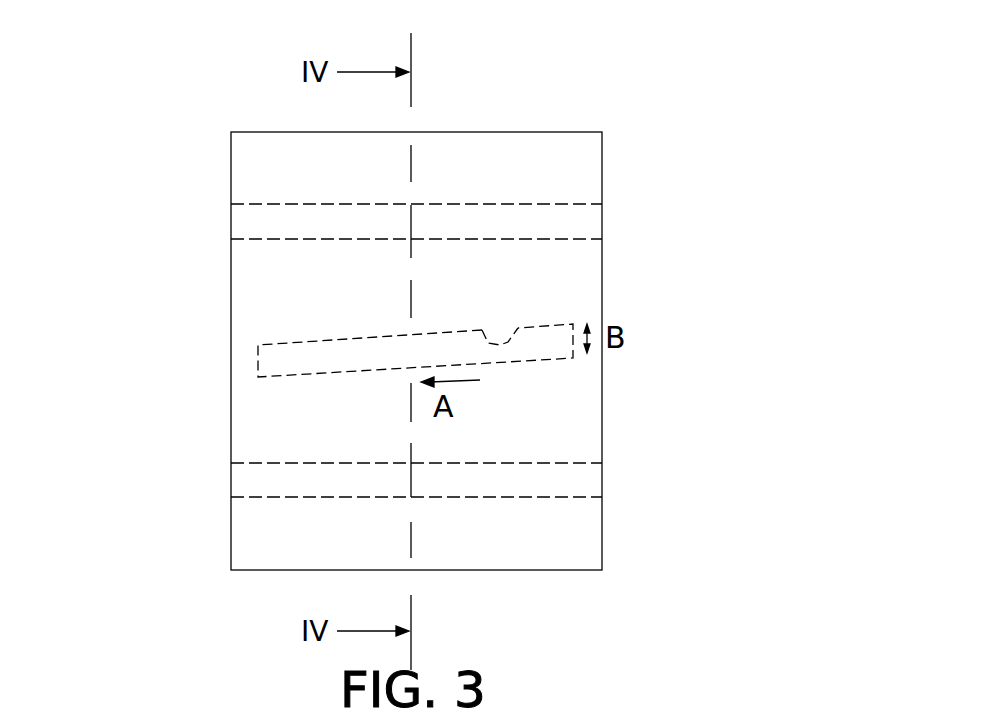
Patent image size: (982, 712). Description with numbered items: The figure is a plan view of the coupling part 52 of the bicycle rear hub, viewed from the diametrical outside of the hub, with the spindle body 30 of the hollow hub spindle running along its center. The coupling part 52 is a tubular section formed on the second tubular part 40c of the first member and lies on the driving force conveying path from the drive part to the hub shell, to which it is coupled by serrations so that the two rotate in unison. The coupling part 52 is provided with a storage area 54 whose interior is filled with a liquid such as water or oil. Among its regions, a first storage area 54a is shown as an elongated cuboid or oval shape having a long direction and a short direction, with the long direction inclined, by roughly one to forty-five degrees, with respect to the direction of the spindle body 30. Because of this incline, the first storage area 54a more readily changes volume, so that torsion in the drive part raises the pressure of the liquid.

The spindle body 30 is at (283, 463).
The second tubular part 40c is at (530, 497).
The coupling part 52 is at (495, 121).
The storage area 54 is at (348, 343).
The first storage area 54a is at (518, 335).